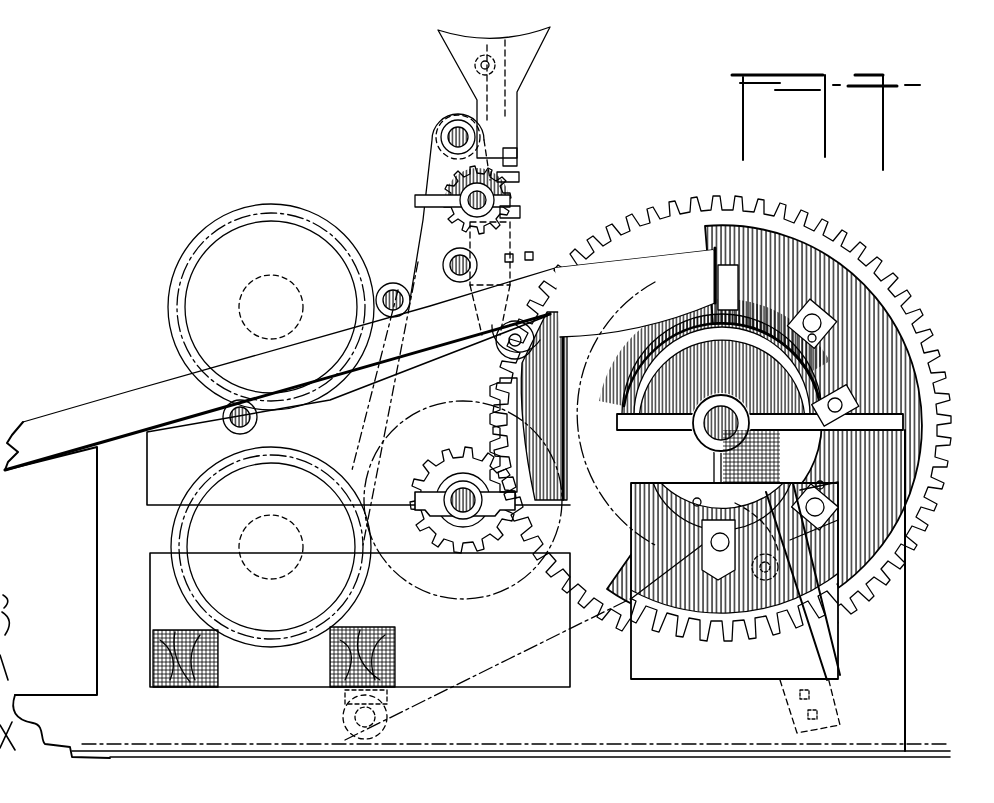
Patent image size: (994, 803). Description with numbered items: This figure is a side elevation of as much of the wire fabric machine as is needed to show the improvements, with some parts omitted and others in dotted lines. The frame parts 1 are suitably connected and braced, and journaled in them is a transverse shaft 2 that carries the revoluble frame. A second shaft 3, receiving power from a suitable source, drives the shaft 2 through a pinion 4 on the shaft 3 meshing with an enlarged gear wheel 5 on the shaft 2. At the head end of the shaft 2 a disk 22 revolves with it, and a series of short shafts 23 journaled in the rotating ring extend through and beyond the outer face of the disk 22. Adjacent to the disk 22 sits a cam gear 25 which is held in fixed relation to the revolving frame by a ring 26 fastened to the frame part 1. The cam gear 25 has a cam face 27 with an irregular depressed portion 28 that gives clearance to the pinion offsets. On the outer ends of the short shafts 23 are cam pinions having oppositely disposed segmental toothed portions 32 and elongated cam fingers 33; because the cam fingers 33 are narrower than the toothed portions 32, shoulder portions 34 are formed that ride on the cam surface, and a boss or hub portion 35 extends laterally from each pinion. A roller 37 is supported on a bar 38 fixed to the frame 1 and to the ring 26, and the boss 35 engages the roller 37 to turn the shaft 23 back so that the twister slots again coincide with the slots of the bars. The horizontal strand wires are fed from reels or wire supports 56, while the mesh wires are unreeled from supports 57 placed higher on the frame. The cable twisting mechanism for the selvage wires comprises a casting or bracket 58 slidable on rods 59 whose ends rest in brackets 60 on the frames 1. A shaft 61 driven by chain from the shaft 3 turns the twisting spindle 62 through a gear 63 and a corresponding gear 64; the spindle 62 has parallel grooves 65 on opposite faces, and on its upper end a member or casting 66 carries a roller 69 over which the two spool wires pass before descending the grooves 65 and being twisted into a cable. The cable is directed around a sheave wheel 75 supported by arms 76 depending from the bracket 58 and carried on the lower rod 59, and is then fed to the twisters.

The frame parts 1 is at (475, 590).
The shaft 2 is at (734, 554).
The shaft 3 is at (455, 508).
The pinion 4 is at (445, 462).
The enlarged gear wheel 5 is at (641, 215).
The disk 22 is at (768, 290).
The short shafts 23 is at (718, 285).
The cam gear 25 is at (700, 426).
The ring 26 is at (655, 402).
The cam face 27 is at (680, 325).
The irregular portion 28 is at (780, 495).
The segmental toothed portions 32 is at (677, 440).
The cam fingers 33 is at (815, 300).
The shoulder portions 34 is at (840, 512).
The boss or hub portion 35 is at (845, 485).
The roller 37 is at (742, 612).
The bar 38 is at (788, 650).
The reels or wire supports 56 is at (359, 494).
The supports 57 is at (235, 250).
The casting or bracket 58 is at (515, 200).
The rods 59 is at (452, 137).
The brackets 60 is at (445, 125).
The shaft 61 is at (447, 197).
The twisting spindle 62 is at (520, 176).
The gear 63 is at (521, 214).
The gear 64 is at (503, 278).
The parallel grooves 65 is at (520, 158).
The member or casting 66 is at (505, 96).
The roller 69 is at (477, 70).
The sheave wheel 75 is at (500, 348).
The arms 76 is at (497, 335).